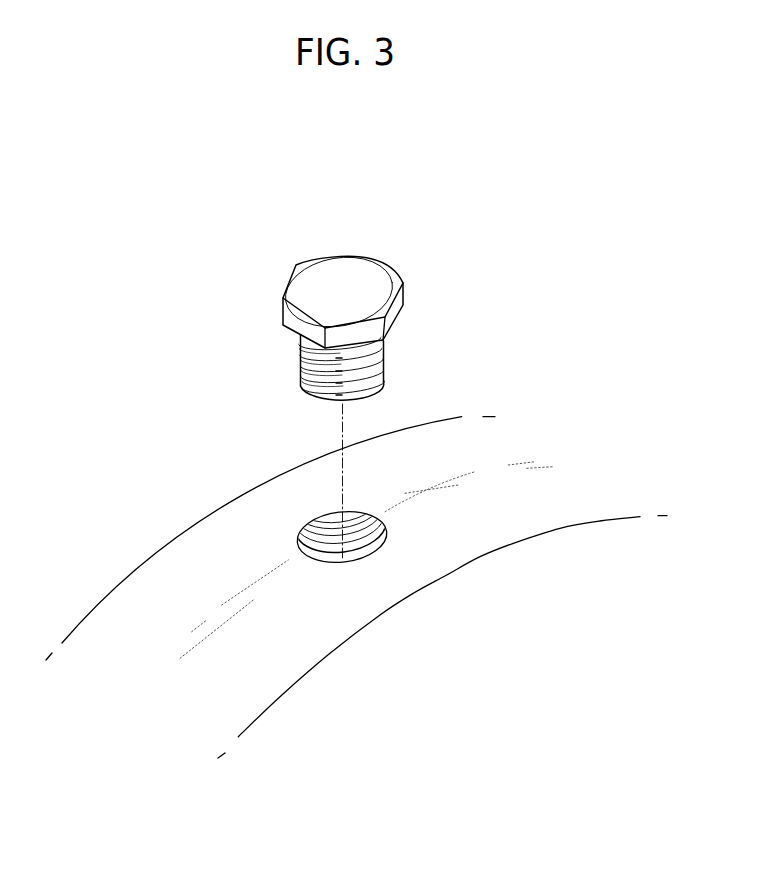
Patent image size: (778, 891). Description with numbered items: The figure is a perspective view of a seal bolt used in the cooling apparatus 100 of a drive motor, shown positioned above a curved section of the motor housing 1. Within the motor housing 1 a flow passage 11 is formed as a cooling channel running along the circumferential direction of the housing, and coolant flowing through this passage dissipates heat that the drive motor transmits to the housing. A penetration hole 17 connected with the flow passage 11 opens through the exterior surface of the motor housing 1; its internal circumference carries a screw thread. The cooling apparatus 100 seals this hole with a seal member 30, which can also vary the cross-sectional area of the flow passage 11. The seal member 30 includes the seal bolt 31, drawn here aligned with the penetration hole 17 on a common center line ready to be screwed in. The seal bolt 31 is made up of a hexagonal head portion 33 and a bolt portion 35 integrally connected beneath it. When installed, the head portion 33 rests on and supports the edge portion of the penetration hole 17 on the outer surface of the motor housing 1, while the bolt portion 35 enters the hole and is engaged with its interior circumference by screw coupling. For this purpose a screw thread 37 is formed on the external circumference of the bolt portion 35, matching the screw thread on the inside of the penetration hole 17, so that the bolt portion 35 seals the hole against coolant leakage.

The cooling apparatus 100 is at (115, 207).
The motor housing 1 is at (182, 535).
The flow passage 11 is at (352, 553).
The penetration hole 17 is at (317, 515).
The seal member 30 is at (412, 295).
The seal bolt 31 is at (215, 311).
The head portion 33 is at (292, 314).
The bolt portion 35 is at (300, 368).
The screw thread 37 is at (368, 362).